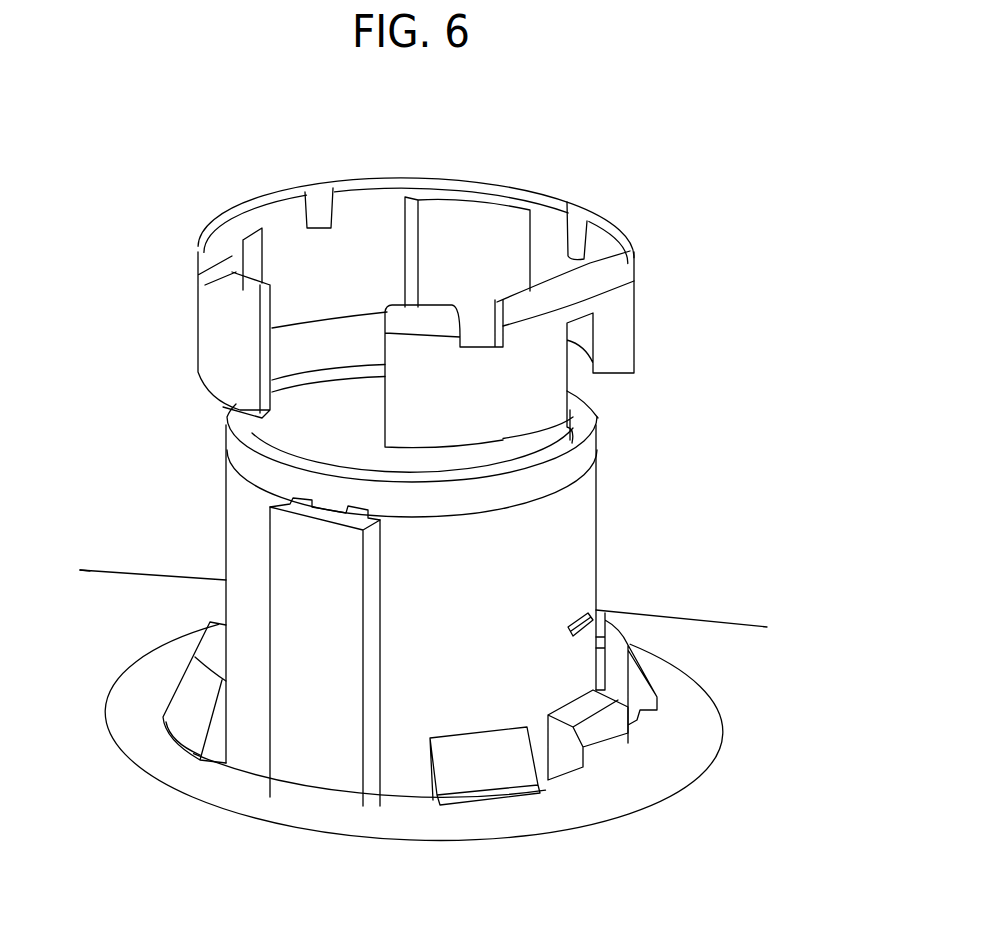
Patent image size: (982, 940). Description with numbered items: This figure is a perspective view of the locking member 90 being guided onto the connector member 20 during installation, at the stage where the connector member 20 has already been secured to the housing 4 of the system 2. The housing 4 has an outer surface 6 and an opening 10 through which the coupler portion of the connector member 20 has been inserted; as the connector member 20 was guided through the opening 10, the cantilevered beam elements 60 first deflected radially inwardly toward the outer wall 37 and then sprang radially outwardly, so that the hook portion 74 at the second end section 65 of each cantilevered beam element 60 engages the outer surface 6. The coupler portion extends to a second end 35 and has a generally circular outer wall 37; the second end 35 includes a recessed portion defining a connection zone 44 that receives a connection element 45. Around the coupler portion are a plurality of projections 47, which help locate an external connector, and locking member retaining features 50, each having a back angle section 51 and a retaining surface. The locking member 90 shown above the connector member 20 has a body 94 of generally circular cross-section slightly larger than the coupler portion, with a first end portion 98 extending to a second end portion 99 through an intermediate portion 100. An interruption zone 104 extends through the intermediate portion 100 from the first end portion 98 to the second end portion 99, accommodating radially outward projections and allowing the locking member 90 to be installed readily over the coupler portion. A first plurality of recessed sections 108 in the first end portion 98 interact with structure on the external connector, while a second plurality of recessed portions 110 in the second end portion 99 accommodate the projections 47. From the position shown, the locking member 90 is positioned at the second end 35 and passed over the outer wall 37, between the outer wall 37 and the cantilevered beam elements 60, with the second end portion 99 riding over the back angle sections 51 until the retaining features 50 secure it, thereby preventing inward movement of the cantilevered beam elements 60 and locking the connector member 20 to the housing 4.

The system 2 is at (93, 638).
The housing 4 is at (127, 612).
The outer surface 6 is at (190, 620).
The opening 10 is at (414, 745).
The connector member 20 is at (414, 607).
The second end 35 is at (575, 465).
The outer wall 37 is at (525, 548).
The connection zone 44 is at (340, 412).
The connection element 45 is at (598, 427).
The projection 47 is at (596, 722).
The locking member retaining feature 50 is at (582, 657).
The back angle section 51 is at (569, 626).
The cantilevered beam element 60 is at (477, 721).
The second end section 65 is at (496, 717).
The hook portion 74 is at (430, 763).
The locking member 90 is at (397, 284).
The body 94 is at (357, 170).
The first end portion 98 is at (487, 186).
The second end portion 99 is at (307, 318).
The intermediate portion 100 is at (375, 215).
The interruption zone 104 is at (383, 344).
The first plurality of recessed sections 108 is at (585, 248).
The second plurality of recessed portions 110 is at (255, 243).